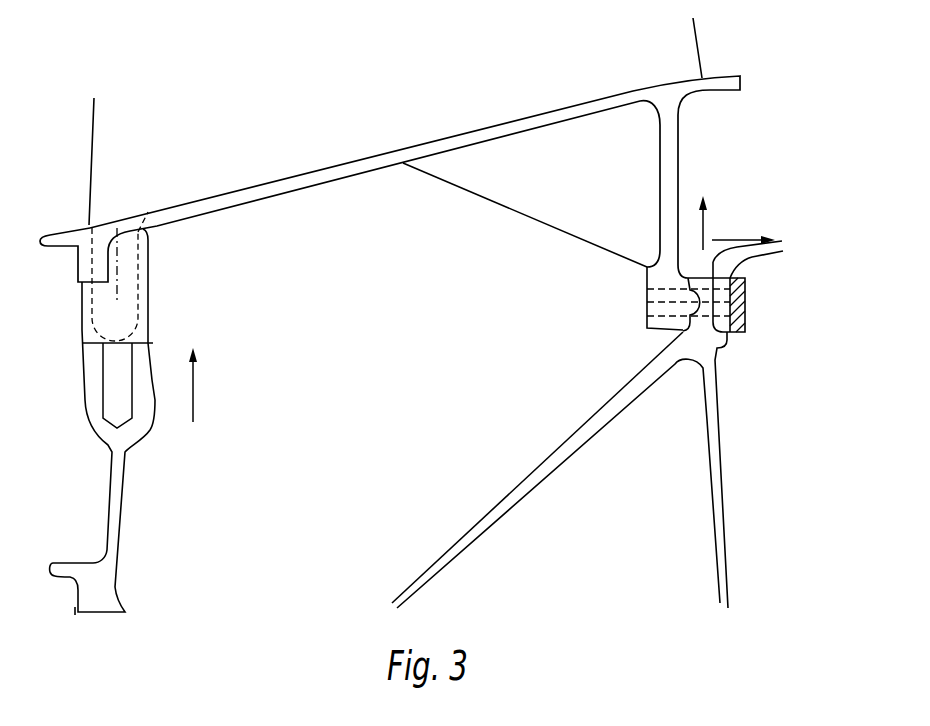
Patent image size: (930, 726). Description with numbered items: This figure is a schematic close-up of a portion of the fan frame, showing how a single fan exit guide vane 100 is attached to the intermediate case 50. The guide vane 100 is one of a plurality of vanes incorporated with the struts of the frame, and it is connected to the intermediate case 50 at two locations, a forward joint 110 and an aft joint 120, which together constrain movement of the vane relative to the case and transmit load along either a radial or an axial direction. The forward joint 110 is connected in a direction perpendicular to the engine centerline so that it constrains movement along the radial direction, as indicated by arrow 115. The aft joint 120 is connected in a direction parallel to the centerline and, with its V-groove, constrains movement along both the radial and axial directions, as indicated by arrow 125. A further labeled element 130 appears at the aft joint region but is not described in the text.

The fan exit guide vane 100 is at (297, 106).
The intermediate case 50 is at (352, 495).
The forward joint 110 is at (153, 343).
The arrow 115 is at (193, 383).
The aft joint 120 is at (647, 304).
The arrow 125 is at (738, 240).
The strut member 130 is at (675, 278).